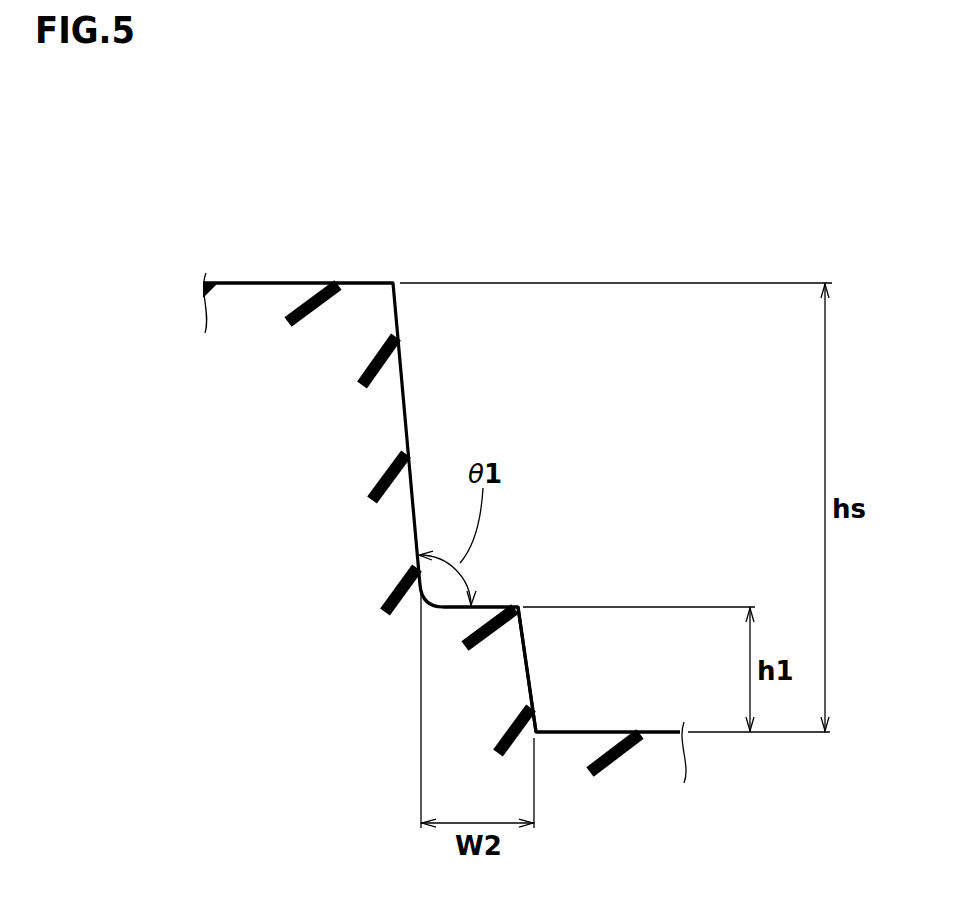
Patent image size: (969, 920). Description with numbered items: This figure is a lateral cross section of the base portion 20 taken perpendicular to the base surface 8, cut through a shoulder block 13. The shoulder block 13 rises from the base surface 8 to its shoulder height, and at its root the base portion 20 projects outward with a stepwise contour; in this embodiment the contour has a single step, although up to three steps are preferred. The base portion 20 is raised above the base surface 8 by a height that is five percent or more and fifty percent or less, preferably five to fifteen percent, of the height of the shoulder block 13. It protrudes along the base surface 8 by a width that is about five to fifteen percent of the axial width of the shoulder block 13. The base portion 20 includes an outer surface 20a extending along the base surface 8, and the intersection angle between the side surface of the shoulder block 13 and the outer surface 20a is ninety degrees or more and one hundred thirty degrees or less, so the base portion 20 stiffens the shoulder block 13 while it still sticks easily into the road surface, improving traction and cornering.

The shoulder block 13 is at (280, 282).
The base portion 20 is at (536, 671).
The outer surface 20a is at (490, 607).
The base surface 8 is at (607, 730).